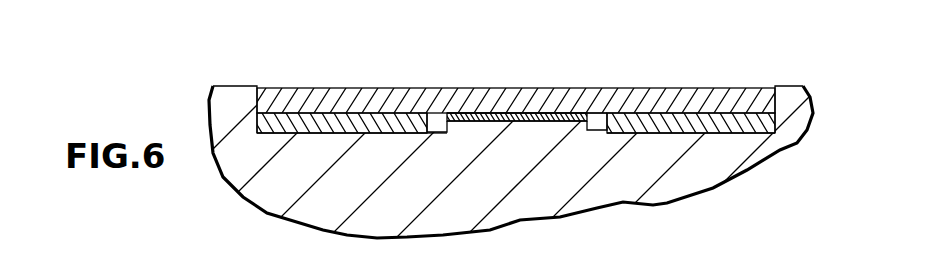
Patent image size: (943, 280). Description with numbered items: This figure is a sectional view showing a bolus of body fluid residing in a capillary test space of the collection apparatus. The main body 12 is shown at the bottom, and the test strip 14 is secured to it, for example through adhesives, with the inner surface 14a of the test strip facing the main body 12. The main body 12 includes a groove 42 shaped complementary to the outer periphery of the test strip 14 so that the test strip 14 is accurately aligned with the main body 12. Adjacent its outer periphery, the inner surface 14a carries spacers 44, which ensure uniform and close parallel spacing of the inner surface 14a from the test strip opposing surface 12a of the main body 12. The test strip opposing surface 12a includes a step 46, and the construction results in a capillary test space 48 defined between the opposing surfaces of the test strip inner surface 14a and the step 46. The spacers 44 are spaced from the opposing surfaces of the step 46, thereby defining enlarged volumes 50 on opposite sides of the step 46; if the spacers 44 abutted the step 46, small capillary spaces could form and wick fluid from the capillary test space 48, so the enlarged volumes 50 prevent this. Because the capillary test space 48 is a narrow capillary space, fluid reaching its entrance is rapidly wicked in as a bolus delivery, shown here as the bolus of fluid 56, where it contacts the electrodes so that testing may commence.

The main body 12 is at (233, 80).
The test strip opposing surface 12a is at (431, 135).
The test strip 14 is at (526, 80).
The inner surface 14a is at (608, 112).
The groove 42 is at (777, 128).
The spacers 44 is at (293, 122).
The step 46 is at (524, 123).
The capillary test space 48 is at (558, 112).
The enlarged volumes 50 is at (438, 120).
The bolus of fluid 56 is at (481, 123).